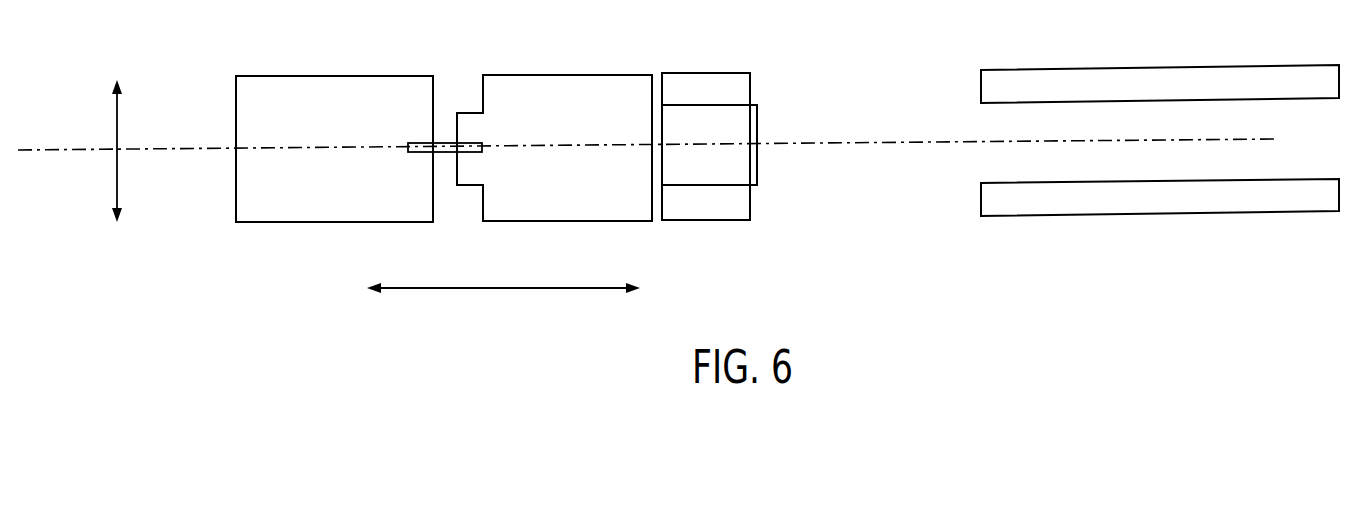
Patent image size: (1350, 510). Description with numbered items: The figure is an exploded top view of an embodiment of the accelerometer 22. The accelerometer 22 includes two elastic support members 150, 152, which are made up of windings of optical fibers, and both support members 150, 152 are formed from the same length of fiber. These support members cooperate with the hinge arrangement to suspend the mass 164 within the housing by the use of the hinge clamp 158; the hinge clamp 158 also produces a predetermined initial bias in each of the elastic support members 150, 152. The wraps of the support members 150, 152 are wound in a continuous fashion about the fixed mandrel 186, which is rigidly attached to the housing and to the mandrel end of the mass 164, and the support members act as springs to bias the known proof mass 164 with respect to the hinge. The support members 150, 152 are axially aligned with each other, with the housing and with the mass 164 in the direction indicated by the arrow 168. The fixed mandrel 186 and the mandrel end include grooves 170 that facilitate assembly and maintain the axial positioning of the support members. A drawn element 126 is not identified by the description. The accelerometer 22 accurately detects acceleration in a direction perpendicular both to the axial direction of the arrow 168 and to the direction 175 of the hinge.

The accelerometer 22 is at (313, 222).
The optical fiber 126 is at (445, 143).
The elastic support member 150 is at (1088, 68).
The elastic support member 152 is at (1052, 213).
The hinge clamp 158 is at (278, 75).
The mass 164 is at (560, 83).
The arrow 168 is at (453, 287).
The grooves 170 is at (765, 206).
The direction 175 is at (118, 133).
The fixed mandrel 186 is at (738, 88).